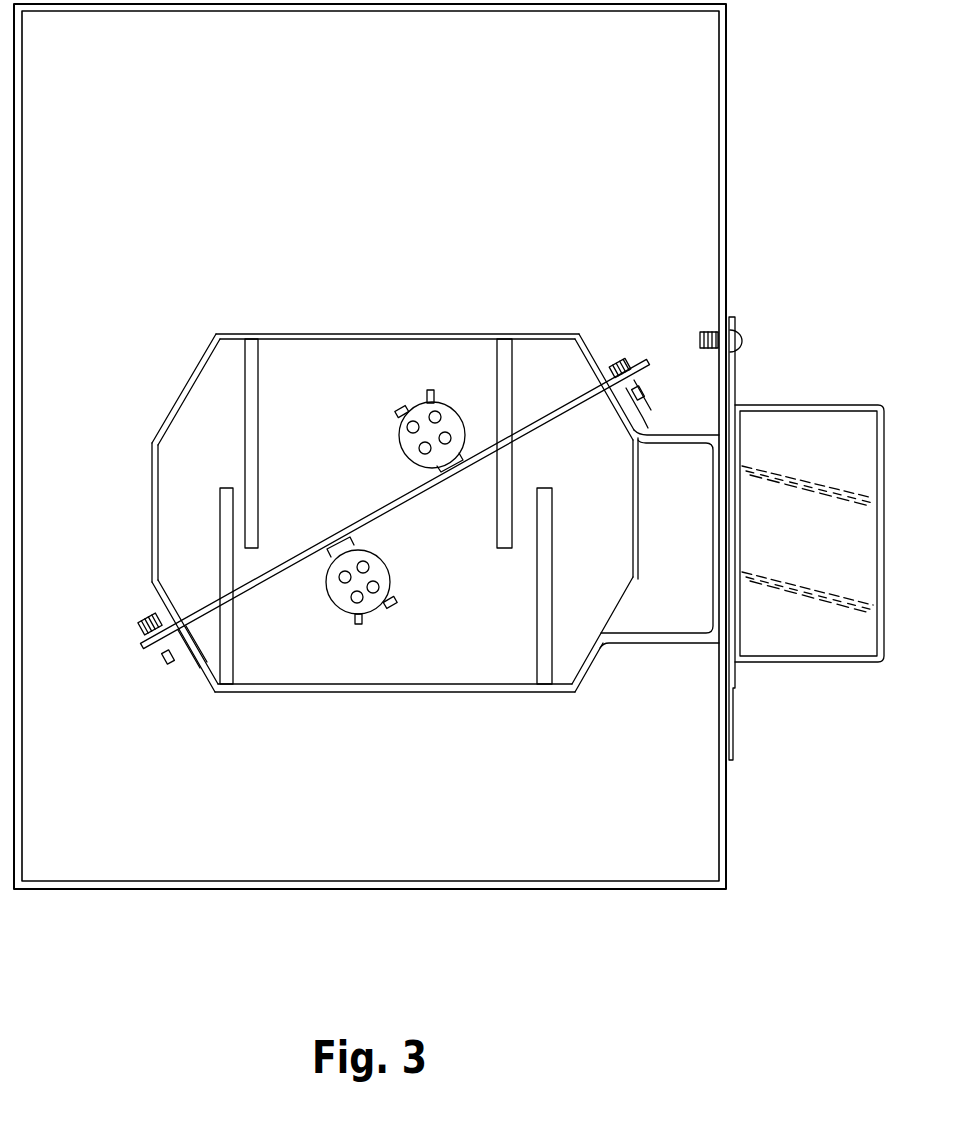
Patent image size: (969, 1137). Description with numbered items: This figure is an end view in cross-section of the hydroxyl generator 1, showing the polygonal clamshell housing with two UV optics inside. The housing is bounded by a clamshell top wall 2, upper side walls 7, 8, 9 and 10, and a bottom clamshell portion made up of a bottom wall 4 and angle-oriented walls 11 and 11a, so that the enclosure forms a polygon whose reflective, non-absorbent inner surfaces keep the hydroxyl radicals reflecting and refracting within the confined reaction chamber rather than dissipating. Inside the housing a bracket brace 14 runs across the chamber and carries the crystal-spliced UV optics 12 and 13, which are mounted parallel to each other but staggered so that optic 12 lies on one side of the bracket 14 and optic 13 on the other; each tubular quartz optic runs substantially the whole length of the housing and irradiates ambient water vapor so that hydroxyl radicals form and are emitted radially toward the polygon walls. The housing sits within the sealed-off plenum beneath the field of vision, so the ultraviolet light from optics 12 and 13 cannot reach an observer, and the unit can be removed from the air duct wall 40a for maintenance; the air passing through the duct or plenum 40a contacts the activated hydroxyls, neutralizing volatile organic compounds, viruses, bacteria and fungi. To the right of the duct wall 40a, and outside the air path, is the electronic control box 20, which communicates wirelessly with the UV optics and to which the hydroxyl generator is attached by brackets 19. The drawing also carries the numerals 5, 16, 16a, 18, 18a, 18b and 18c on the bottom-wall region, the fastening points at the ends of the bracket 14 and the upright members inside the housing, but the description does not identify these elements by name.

The hydroxyl generator 1 is at (168, 242).
The clamshell top wall 2 is at (382, 338).
The bottom wall 4 is at (440, 684).
The bottom wall outer panel 5 is at (405, 694).
The upper side wall 7 is at (590, 338).
The upper side wall 8 is at (632, 528).
The upper side wall 9 is at (181, 407).
The upper side wall 10 is at (150, 510).
The angle-oriented wall 11 is at (197, 672).
The angle-oriented wall 11a is at (613, 621).
The crystal-spliced UV optic 12 is at (375, 603).
The crystal-spliced UV optic 13 is at (410, 406).
The bracket brace 14 is at (258, 578).
The fastening bolt 16 is at (647, 370).
The fastening bolt 16a is at (150, 655).
The partition plate 18 is at (540, 660).
The partition plate 18a is at (510, 357).
The partition plate 18b is at (247, 375).
The partition plate 18c is at (232, 668).
The bracket 19 is at (663, 441).
The electronic control box 20 is at (820, 397).
The air duct wall 40a is at (738, 718).